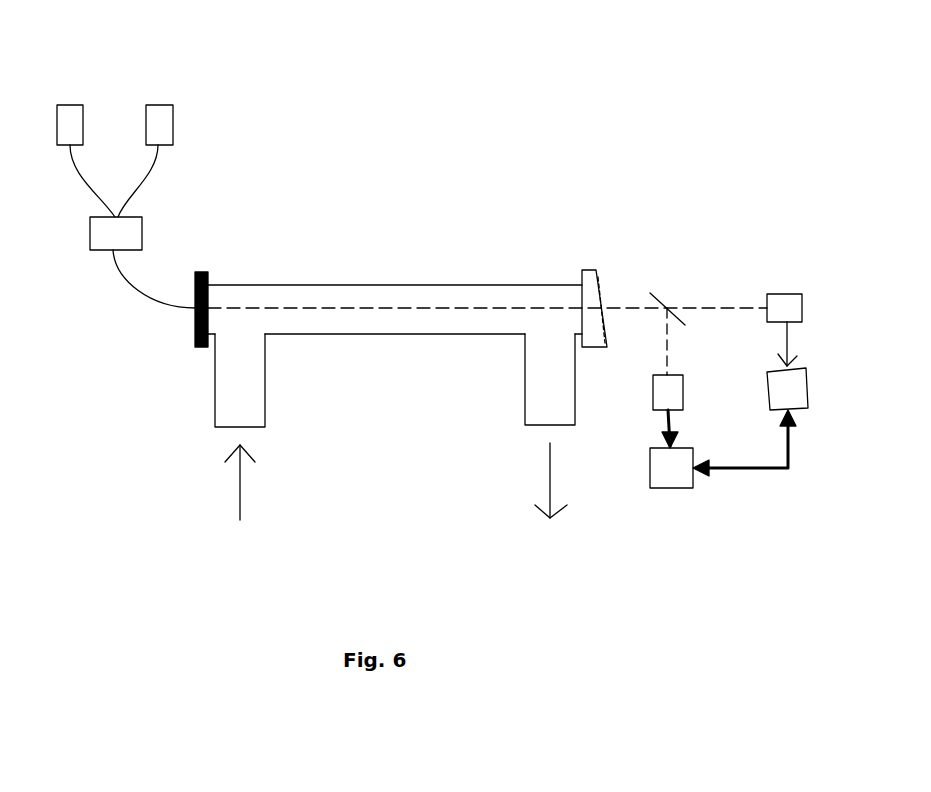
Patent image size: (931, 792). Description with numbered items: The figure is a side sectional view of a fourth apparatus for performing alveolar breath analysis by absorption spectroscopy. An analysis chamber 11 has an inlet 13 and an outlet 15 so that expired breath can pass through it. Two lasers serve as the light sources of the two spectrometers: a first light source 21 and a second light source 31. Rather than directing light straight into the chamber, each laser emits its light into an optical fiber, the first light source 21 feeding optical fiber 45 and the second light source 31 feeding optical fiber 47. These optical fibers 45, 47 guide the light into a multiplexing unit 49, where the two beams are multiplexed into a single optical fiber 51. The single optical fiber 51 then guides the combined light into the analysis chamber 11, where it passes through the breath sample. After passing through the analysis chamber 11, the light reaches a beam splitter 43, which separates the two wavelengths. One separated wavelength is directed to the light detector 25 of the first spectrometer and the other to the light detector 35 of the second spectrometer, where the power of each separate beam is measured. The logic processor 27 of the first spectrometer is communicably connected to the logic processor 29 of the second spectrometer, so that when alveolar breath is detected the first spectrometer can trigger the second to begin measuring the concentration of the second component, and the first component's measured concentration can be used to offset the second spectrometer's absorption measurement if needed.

The analysis chamber 11 is at (481, 275).
The inlet 13 is at (267, 449).
The outlet 15 is at (534, 446).
The light source 21 is at (96, 92).
The light source 31 is at (185, 99).
The optical fiber 45 is at (72, 188).
The optical fiber 47 is at (183, 181).
The multiplexing unit 49 is at (156, 226).
The single optical fiber 51 is at (148, 299).
The beam splitter 43 is at (688, 307).
The light detector 25 is at (780, 293).
The logic processor 27 is at (787, 422).
The light detector 35 is at (645, 411).
The logic processor 29 is at (671, 504).